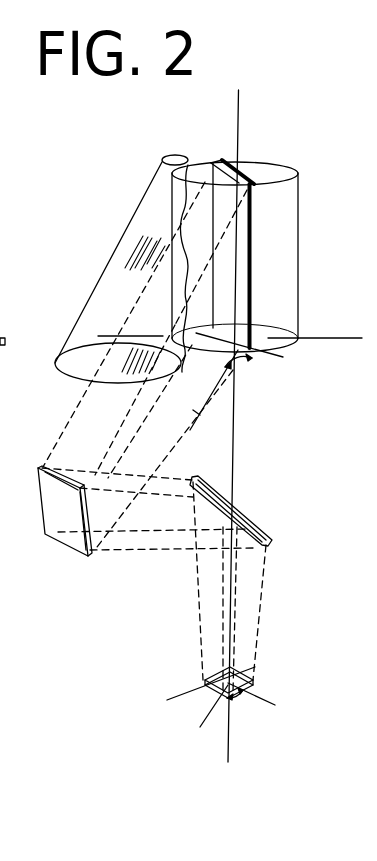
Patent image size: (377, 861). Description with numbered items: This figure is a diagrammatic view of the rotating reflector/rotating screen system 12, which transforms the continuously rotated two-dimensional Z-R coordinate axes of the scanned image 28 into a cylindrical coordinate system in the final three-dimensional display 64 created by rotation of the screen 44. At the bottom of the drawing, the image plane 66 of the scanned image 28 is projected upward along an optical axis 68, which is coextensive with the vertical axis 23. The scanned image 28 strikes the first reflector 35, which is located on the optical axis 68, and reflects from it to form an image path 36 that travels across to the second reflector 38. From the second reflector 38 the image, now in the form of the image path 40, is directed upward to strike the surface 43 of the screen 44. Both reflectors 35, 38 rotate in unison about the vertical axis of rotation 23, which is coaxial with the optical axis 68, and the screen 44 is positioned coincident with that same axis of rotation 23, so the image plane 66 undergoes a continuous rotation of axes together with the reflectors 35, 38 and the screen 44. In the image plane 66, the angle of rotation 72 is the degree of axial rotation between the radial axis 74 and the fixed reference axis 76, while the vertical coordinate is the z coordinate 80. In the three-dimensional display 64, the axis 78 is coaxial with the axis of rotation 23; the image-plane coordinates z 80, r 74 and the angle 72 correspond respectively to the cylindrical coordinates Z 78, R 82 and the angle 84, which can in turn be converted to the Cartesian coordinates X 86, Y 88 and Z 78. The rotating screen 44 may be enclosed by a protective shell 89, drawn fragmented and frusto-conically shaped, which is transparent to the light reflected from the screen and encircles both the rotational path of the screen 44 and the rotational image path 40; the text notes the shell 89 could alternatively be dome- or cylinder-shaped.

The rotating reflector/rotating screen system 12 is at (120, 195).
The vertical axis of rotation 23 is at (233, 446).
The (Z-R) scanned image 28 is at (253, 595).
The first reflector 35 is at (258, 523).
The image path 36 is at (153, 540).
The second reflector 38 is at (58, 543).
The image path 40 is at (98, 408).
The surface of the screen 43 is at (222, 177).
The screen 44 is at (230, 160).
The three-dimensional display 64 is at (300, 210).
The image plane 66 is at (210, 673).
The optical axis 68 is at (230, 613).
The angle of rotation (α) 72 is at (245, 703).
The radial (r) axis 74 is at (298, 690).
The fixed reference (x) axis 76 is at (207, 710).
The axis (Z) 78 is at (241, 235).
The coordinate (z) 80 is at (170, 693).
The cylindrical coordinate (R) 82 is at (330, 364).
The cylindrical coordinate (α') 84 is at (267, 405).
The Cartesian coordinate (X) 86 is at (210, 408).
The Cartesian coordinate (Y) 88 is at (322, 337).
The protective shell 89 is at (108, 258).